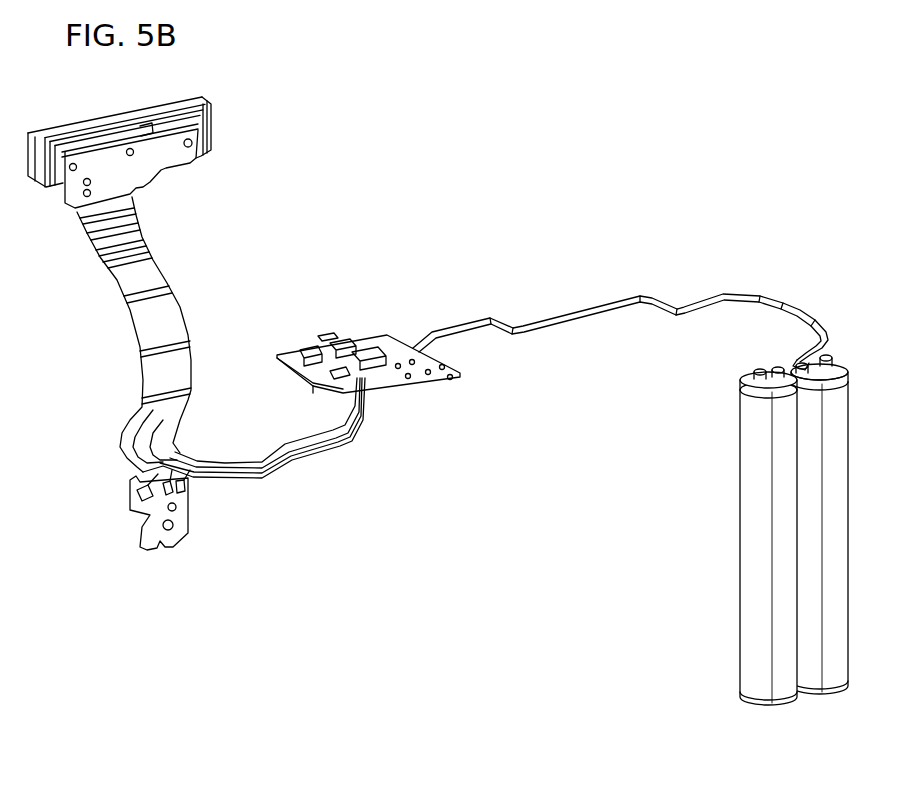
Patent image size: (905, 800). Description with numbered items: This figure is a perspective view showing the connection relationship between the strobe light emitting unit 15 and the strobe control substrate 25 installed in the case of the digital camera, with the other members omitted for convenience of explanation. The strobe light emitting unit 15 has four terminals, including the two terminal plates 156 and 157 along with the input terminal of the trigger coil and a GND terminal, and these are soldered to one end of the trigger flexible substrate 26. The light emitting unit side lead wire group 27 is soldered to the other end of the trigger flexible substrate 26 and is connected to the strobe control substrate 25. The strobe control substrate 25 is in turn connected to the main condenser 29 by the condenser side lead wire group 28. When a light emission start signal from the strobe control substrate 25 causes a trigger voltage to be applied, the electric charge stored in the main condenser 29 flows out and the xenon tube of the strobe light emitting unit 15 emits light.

The strobe light emitting unit 15 is at (192, 99).
The terminal plate 157 is at (213, 133).
The terminal plate 156 is at (73, 172).
The trigger flexible substrate 26 is at (153, 252).
The strobe control substrate 25 is at (377, 335).
The light emitting unit side lead wire group 27 is at (297, 463).
The condenser side lead wire group 28 is at (588, 307).
The main condenser 29 is at (820, 693).